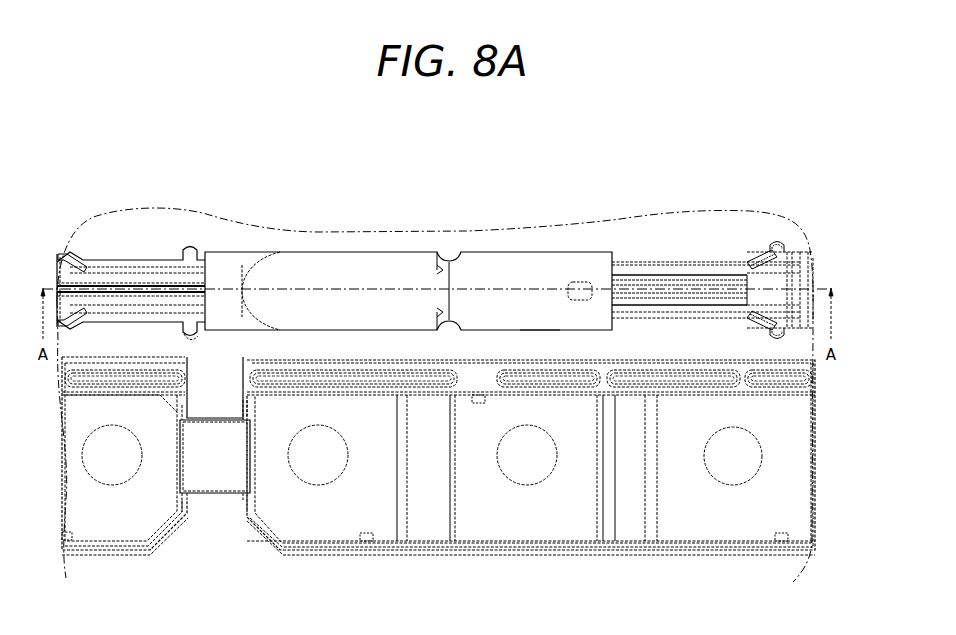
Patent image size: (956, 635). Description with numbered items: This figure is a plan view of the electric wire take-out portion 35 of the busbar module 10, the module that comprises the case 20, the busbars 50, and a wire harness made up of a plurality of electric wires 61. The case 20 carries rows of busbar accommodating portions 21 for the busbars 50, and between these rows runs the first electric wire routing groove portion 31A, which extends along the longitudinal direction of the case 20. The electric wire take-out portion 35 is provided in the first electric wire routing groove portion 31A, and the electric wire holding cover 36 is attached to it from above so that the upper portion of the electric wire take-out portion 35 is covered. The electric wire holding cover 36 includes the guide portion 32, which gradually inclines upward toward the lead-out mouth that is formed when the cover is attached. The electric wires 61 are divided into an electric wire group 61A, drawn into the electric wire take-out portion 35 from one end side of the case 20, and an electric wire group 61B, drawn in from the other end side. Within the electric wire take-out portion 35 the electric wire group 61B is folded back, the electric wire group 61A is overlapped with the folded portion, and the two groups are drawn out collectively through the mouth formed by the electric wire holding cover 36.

The busbar module 10 is at (408, 556).
The case 20 is at (308, 548).
The busbar accommodating portion 21 is at (92, 552).
The first electric wire routing groove portion 31A is at (120, 272).
The guide portion 32 is at (362, 280).
The electric wire take-out portion 35 is at (541, 335).
The electric wire holding cover 36 is at (485, 252).
The busbar 50 is at (576, 525).
The electric wire 61 is at (687, 263).
The electric wire group 61A is at (160, 283).
The electric wire group 61B is at (765, 243).